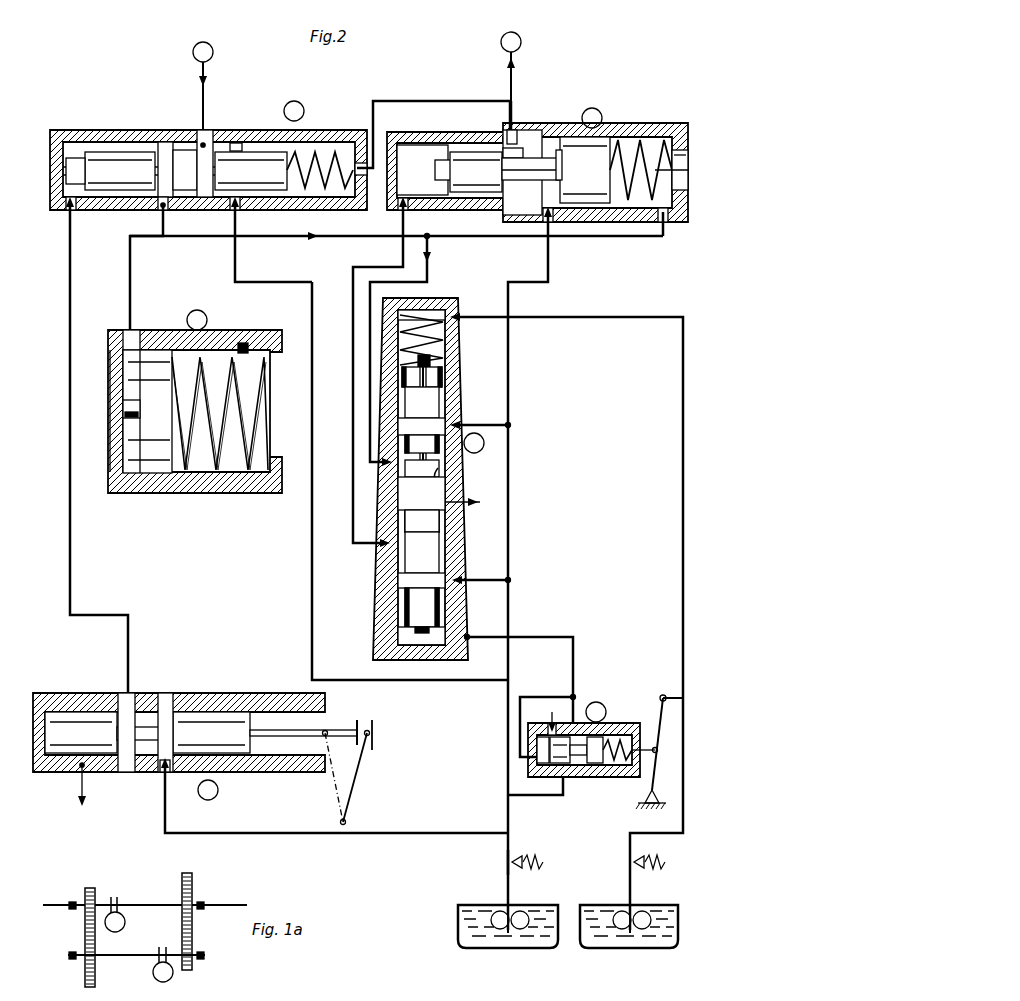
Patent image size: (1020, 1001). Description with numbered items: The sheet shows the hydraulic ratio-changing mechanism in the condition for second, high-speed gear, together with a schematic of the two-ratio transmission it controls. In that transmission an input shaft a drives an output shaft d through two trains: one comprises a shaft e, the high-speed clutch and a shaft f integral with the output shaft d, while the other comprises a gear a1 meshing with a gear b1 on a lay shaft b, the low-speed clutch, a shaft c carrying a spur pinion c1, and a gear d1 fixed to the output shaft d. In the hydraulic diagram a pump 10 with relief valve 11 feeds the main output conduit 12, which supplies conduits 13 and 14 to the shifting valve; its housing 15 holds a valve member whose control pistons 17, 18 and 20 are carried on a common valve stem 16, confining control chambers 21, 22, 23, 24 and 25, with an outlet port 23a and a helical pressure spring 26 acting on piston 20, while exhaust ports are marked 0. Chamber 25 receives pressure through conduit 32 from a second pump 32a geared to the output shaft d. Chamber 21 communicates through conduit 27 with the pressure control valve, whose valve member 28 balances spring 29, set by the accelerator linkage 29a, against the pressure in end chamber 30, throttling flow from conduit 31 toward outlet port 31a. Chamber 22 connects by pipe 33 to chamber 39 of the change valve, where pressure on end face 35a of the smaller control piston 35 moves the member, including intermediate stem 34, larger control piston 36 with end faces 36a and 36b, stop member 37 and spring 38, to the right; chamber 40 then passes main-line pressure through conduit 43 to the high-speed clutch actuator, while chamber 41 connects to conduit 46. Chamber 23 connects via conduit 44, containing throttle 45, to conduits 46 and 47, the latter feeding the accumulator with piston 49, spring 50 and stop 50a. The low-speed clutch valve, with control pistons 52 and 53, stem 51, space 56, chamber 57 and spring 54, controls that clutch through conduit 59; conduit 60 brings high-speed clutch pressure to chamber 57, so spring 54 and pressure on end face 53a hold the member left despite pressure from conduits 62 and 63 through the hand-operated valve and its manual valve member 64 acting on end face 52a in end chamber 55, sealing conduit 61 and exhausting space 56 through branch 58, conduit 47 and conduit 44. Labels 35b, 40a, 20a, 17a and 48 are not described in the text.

In FIG. 2, the end chamber 55 is at (68, 150).
In FIG. 2, the control piston 52 is at (120, 158).
In FIG. 2, the end face 52a is at (78, 160).
In FIG. 2, the space 56 is at (177, 148).
In FIG. 2, the conduit 59 is at (203, 112).
In FIG. 2, the control piston 53 is at (250, 152).
In FIG. 2, the end face 53a is at (300, 150).
In FIG. 2, the chamber 57 is at (340, 150).
In FIG. 2, the helical pressure spring 54 is at (335, 198).
In FIG. 2, the branch conduit 58 is at (163, 222).
In FIG. 2, the intermediate stem 51 is at (186, 200).
In FIG. 2, the conduit 47 is at (272, 238).
In FIG. 2, the conduit 63 is at (72, 305).
In FIG. 2, the conduit 60 is at (425, 101).
In FIG. 2, the conduit 61 is at (311, 528).
In FIG. 2, the chamber 39 is at (405, 150).
In FIG. 2, the end face 35a is at (442, 156).
In FIG. 2, the control piston 35 is at (462, 158).
In FIG. 2, the piston land 35b is at (508, 154).
In FIG. 2, the port 40a is at (478, 137).
In FIG. 2, the conduit 43 is at (514, 110).
In FIG. 2, the end face 36a is at (556, 150).
In FIG. 2, the control piston 36 is at (578, 140).
In FIG. 2, the end face 36b is at (628, 140).
In FIG. 2, the chamber 41 is at (678, 145).
In FIG. 2, the stop member 37 is at (670, 165).
In FIG. 2, the intermediate stem 34 is at (533, 168).
In FIG. 2, the chamber 40 is at (500, 205).
In FIG. 2, the throttle 45 is at (412, 350).
In FIG. 2, the conduit 46 is at (582, 238).
In FIG. 2, the helical pressure spring 38 is at (640, 218).
In FIG. 2, the pipe 33 is at (352, 318).
In FIG. 2, the conduit 44 is at (369, 340).
In FIG. 2, the piston 49 is at (150, 348).
In FIG. 2, the helical pressure spring 50 is at (262, 405).
In FIG. 2, the stop 50a is at (248, 342).
In FIG. 2, the cylinder wall 48 is at (122, 450).
In FIG. 2, the helical pressure spring 26 is at (425, 320).
In FIG. 2, the control chamber 25 is at (430, 335).
In FIG. 2, the housing 15 is at (430, 350).
In FIG. 2, the control piston 20 is at (440, 376).
In FIG. 2, the valve stem 16 is at (428, 395).
In FIG. 2, the piston land 20a is at (405, 395).
In FIG. 2, the control chamber 24 is at (405, 420).
In FIG. 2, the control piston 18 is at (395, 446).
In FIG. 2, the conduit 14 is at (478, 424).
In FIG. 2, the control chamber 23 is at (440, 486).
In FIG. 2, the exhaust port 0 is at (444, 493).
In FIG. 2, the outlet port 23a is at (448, 508).
In FIG. 2, the control chamber 22 is at (445, 545).
In FIG. 2, the conduit 13 is at (490, 582).
In FIG. 2, the control piston 17 is at (405, 607).
In FIG. 2, the control chamber 21 is at (395, 636).
In FIG. 2, the port 17a is at (398, 648).
In FIG. 2, the conduit 27 is at (573, 668).
In FIG. 2, the output conduit 12 is at (507, 710).
In FIG. 2, the conduit 32 is at (682, 498).
In FIG. 2, the outlet port 31a is at (544, 718).
In FIG. 2, the end chamber 30 is at (540, 755).
In FIG. 2, the valve member 28 is at (578, 760).
In FIG. 2, the helical pressure spring 29 is at (618, 766).
In FIG. 2, the accelerator linkage 29a is at (660, 730).
In FIG. 2, the conduit 31 is at (552, 796).
In FIG. 2, the valve member 64 is at (160, 700).
In FIG. 2, the conduit 62 is at (350, 826).
In FIG. 2, the relief valve 11 is at (524, 862).
In FIG. 2, the pump 10 is at (522, 910).
In FIG. 2, the second pump 32a is at (646, 910).
In FIG. 1A, the input shaft a is at (81, 894).
In FIG. 1A, the gear a1 is at (90, 887).
In FIG. 1A, the output shaft d is at (184, 894).
In FIG. 1A, the gear d1 is at (190, 876).
In FIG. 1A, the lay shaft b is at (136, 965).
In FIG. 1A, the gear b1 is at (86, 968).
In FIG. 1A, the shaft c is at (195, 962).
In FIG. 1A, the spur pinion c1 is at (190, 964).
In FIG. 1A, the shaft e is at (85, 915).
In FIG. 1A, the shaft f is at (150, 904).